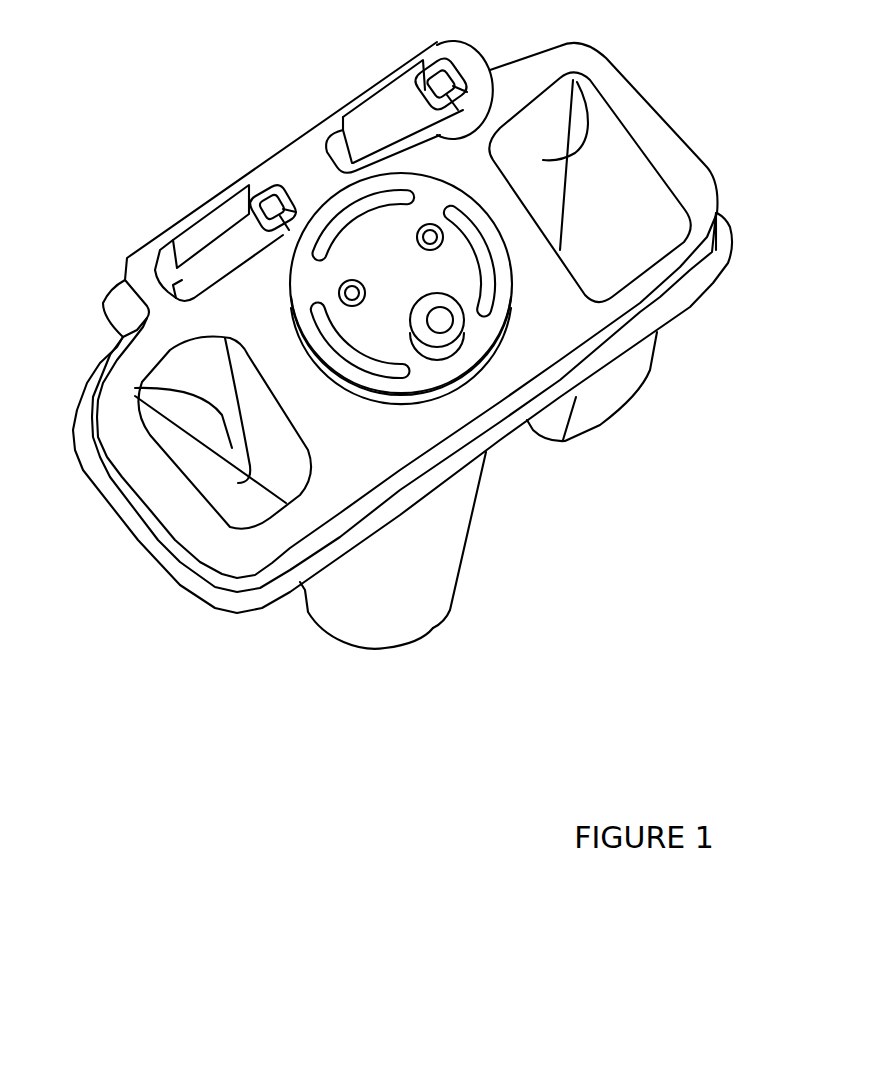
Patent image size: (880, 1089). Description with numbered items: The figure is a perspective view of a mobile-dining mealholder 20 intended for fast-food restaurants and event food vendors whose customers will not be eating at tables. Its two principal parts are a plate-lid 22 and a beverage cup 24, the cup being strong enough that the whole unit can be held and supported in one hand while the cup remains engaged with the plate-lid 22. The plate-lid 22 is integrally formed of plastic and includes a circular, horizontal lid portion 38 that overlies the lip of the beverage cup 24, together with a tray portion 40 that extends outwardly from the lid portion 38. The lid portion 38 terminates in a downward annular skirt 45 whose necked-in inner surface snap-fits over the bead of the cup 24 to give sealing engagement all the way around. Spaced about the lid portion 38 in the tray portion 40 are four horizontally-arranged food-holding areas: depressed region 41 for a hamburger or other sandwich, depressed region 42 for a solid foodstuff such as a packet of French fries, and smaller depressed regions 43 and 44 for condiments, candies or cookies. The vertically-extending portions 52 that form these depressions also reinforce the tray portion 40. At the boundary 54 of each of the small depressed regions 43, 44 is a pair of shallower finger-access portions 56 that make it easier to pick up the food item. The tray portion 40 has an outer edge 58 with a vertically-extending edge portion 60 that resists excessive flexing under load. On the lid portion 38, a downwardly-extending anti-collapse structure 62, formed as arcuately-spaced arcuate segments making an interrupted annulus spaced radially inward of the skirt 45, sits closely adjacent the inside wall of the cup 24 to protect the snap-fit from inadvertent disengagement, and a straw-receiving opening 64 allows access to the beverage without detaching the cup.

The mobile-dining mealholder 20 is at (686, 36).
The plate-lid 22 is at (350, 477).
The beverage cup 24 is at (467, 552).
The lid portion 38 is at (338, 205).
The tray portion 40 is at (273, 540).
The food-receiving depressed region 41 is at (140, 390).
The food-receiving depressed region 42 is at (610, 215).
The food-receiving depressed region 43 is at (228, 233).
The food-receiving depressed region 44 is at (395, 64).
The annular skirt 45 is at (417, 423).
The vertically-extending portions 52 is at (427, 92).
The boundary 54 is at (500, 73).
The finger-access portions 56 is at (448, 78).
The outer edge 58 is at (740, 235).
The vertically-extending edge portion 60 is at (712, 253).
The anti-collapse structure 62 is at (333, 213).
The straw-receiving opening 64 is at (453, 317).